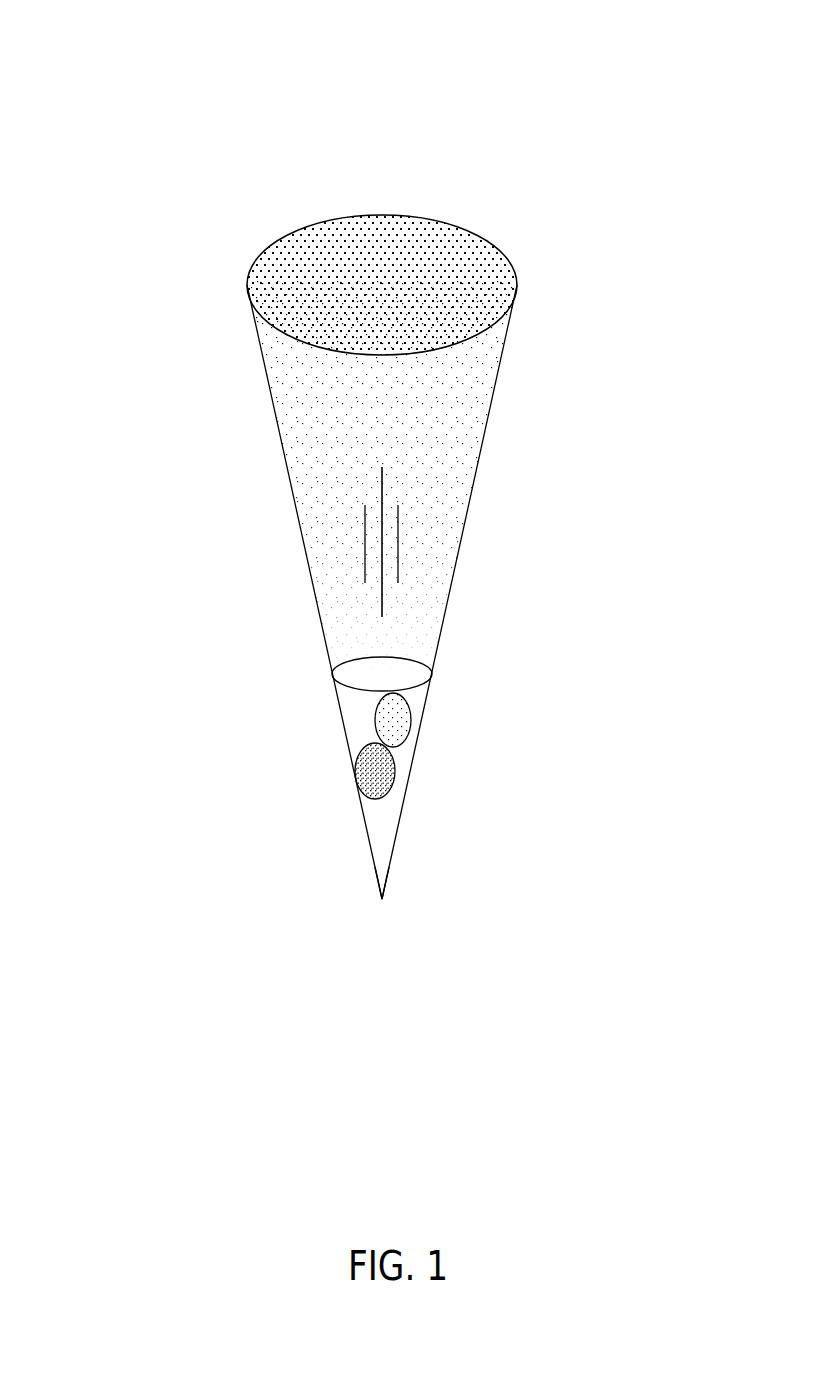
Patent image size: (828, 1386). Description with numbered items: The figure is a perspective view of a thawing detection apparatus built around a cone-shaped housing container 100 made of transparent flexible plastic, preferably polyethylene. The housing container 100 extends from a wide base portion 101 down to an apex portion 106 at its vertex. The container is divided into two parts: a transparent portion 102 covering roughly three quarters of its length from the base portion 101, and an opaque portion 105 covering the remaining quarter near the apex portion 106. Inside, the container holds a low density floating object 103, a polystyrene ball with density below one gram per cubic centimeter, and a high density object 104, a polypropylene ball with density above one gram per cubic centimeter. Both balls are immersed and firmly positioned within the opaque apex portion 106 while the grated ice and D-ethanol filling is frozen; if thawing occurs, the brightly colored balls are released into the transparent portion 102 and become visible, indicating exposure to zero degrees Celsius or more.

The housing container 100 is at (178, 132).
The base portion 101 is at (490, 288).
The transparent portion 102 is at (425, 517).
The low density floating object 103 is at (395, 722).
The high density object 104 is at (375, 787).
The opaque portion 105 is at (355, 703).
The apex portion 106 is at (382, 899).